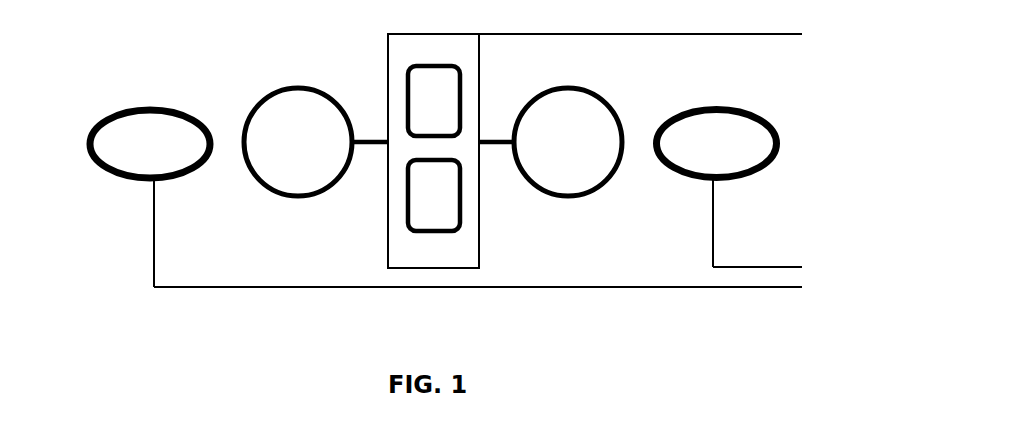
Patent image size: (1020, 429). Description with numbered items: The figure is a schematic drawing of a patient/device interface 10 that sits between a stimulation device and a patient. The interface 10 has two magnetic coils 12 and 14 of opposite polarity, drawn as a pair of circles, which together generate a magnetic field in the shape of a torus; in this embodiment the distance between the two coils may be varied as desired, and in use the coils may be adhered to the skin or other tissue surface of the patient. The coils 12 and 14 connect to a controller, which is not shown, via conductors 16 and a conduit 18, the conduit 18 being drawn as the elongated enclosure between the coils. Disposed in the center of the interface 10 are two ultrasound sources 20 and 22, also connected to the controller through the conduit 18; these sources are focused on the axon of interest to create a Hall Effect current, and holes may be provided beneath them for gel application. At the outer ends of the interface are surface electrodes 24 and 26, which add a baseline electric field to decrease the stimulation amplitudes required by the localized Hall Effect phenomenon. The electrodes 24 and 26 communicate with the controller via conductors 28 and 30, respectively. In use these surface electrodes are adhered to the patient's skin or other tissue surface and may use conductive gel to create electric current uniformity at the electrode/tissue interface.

The interface 10 is at (162, 69).
The magnetic coil 12 is at (280, 119).
The magnetic coil 14 is at (595, 167).
The conductors 16 is at (507, 145).
The conduit 18 is at (572, 35).
The ultrasound source 20 is at (430, 100).
The ultrasound source 22 is at (432, 200).
The surface electrode 24 is at (127, 138).
The surface electrode 26 is at (713, 132).
The conductor 28 is at (278, 287).
The conductor 30 is at (745, 267).